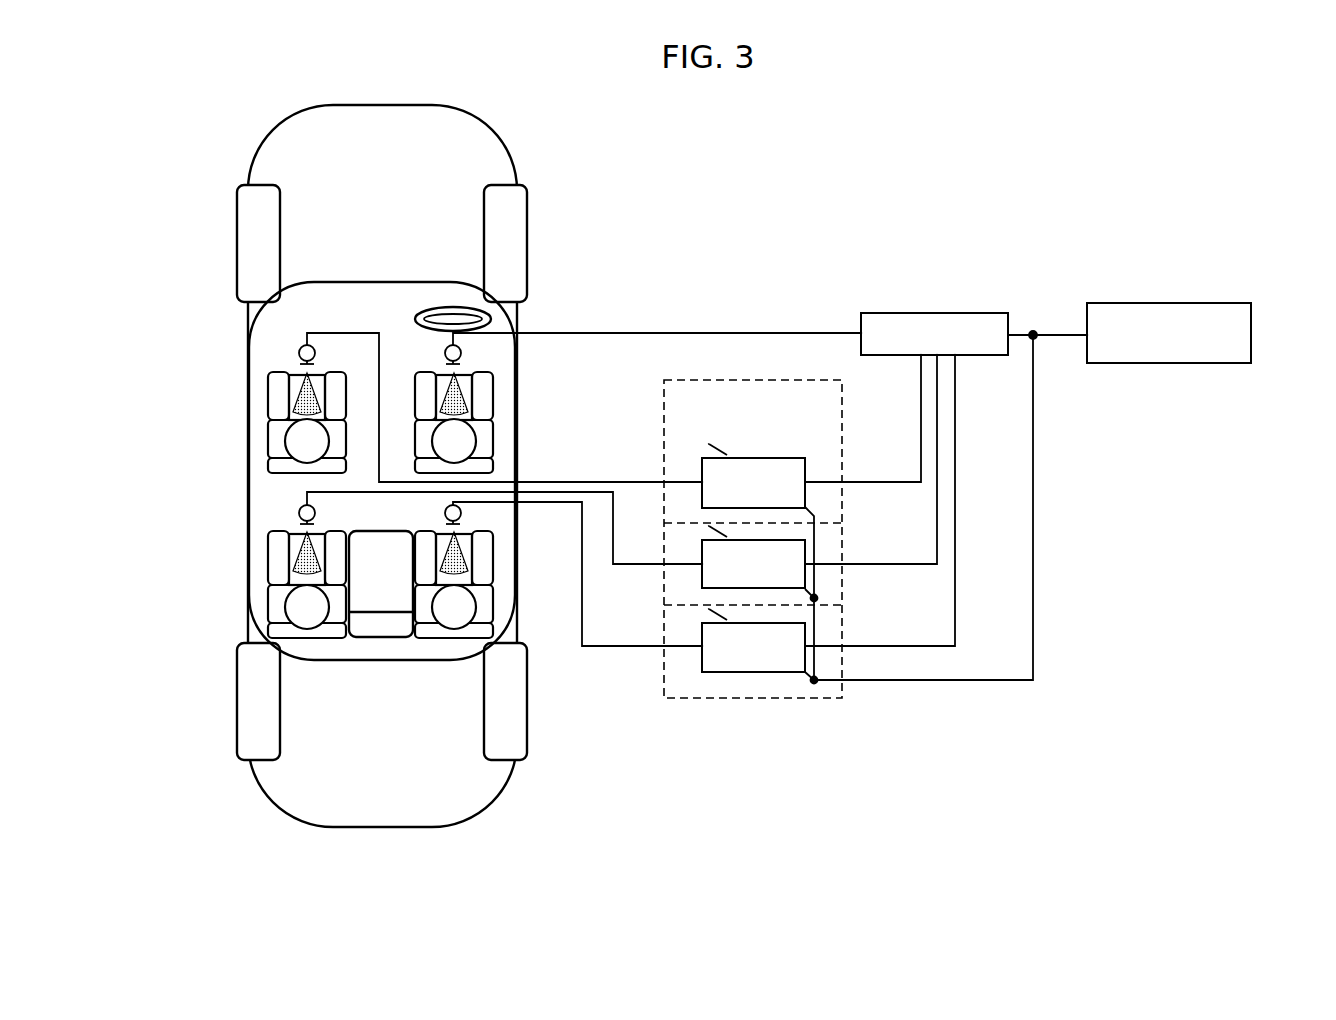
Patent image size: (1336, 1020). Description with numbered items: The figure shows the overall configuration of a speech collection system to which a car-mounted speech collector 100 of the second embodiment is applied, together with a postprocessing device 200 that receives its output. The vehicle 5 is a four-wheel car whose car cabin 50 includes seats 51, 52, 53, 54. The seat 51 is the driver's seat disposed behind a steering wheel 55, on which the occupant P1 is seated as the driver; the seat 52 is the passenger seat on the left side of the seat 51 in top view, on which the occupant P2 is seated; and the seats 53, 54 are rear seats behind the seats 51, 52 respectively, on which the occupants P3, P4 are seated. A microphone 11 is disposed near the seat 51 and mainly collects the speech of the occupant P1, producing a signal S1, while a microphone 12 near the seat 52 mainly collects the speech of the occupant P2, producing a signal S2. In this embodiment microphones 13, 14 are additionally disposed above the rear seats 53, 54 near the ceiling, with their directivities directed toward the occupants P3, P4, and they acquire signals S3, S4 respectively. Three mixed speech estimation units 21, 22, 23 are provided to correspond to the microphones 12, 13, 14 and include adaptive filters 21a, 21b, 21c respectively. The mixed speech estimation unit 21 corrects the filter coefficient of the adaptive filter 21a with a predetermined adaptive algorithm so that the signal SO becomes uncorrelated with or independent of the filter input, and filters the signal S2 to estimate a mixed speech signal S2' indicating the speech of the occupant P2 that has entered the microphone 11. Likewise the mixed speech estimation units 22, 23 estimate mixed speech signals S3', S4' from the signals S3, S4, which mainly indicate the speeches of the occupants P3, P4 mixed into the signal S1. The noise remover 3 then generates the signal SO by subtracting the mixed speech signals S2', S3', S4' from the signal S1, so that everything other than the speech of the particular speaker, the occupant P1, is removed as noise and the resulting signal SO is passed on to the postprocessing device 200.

The vehicle 5 is at (395, 105).
The car-mounted speech collector 100 is at (648, 203).
The car cabin 50 is at (360, 281).
The steering wheel 55 is at (433, 307).
The microphone 11 is at (462, 352).
The microphone 12 is at (298, 352).
The microphone 13 is at (462, 516).
The microphone 14 is at (298, 514).
The seat 51 is at (426, 475).
The seat 52 is at (338, 475).
The seat 53 is at (455, 638).
The seat 54 is at (310, 638).
The occupant P1 is at (460, 441).
The occupant P2 is at (296, 440).
The occupant P3 is at (460, 606).
The occupant P4 is at (296, 608).
The signal S1 is at (724, 331).
The signal S2 is at (504, 407).
The signal S3 is at (504, 556).
The signal S4 is at (577, 600).
The mixed speech signal S2' is at (863, 418).
The mixed speech signal S3' is at (873, 487).
The mixed speech signal S4' is at (898, 514).
The signal SO is at (1035, 508).
The noise remover 3 is at (967, 312).
The postprocessing device 200 is at (1181, 303).
The mixed speech estimation unit 21 is at (848, 462).
The mixed speech estimation unit 22 is at (848, 546).
The mixed speech estimation unit 23 is at (848, 631).
The adaptive filter 21a is at (800, 457).
The adaptive filter 21b is at (807, 551).
The adaptive filter 21c is at (807, 636).